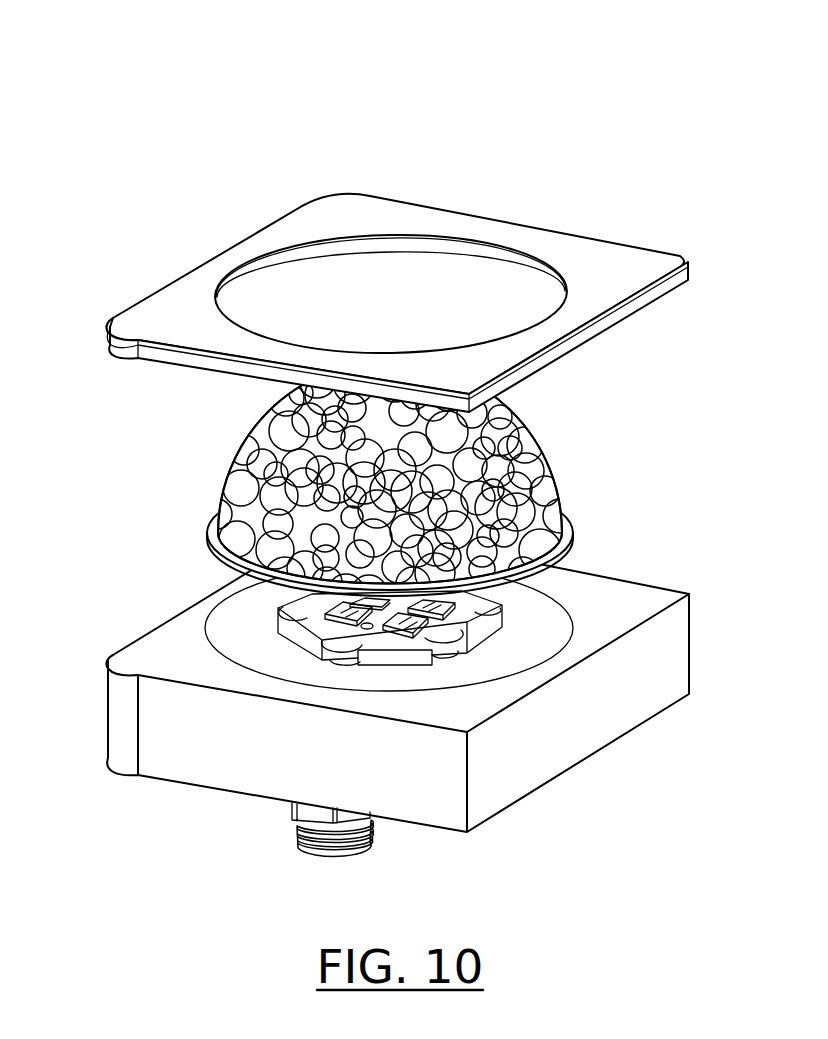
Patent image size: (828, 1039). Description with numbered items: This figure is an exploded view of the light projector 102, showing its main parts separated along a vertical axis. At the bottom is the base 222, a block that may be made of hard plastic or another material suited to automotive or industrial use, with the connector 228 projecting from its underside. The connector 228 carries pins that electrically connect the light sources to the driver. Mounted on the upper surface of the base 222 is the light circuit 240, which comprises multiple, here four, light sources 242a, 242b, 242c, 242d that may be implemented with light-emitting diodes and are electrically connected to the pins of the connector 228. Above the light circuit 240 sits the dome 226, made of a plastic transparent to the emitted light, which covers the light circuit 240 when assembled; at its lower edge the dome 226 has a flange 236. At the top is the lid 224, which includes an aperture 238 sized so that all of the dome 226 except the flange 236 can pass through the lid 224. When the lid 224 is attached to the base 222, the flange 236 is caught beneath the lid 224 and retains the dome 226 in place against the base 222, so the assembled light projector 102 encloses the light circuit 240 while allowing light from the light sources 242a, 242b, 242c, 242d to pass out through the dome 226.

The light projector 102 is at (267, 45).
The base 222 is at (125, 642).
The lid 224 is at (217, 256).
The dome 226 is at (250, 447).
The connector 228 is at (296, 842).
The flange 236 is at (573, 533).
The aperture 238 is at (414, 304).
The light circuit 240 is at (267, 625).
The light source 242a is at (323, 622).
The light source 242b is at (370, 604).
The light source 242c is at (430, 628).
The light source 242d is at (440, 635).